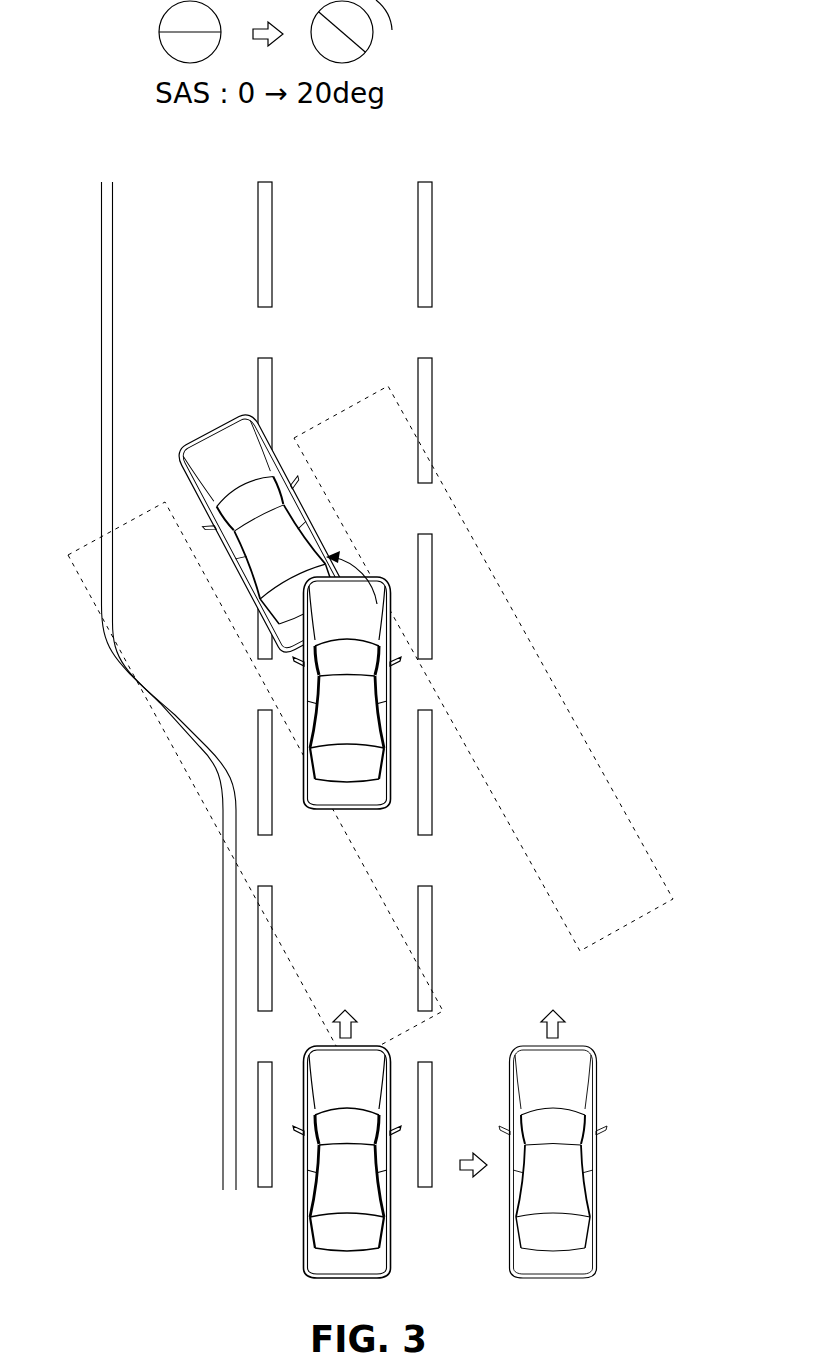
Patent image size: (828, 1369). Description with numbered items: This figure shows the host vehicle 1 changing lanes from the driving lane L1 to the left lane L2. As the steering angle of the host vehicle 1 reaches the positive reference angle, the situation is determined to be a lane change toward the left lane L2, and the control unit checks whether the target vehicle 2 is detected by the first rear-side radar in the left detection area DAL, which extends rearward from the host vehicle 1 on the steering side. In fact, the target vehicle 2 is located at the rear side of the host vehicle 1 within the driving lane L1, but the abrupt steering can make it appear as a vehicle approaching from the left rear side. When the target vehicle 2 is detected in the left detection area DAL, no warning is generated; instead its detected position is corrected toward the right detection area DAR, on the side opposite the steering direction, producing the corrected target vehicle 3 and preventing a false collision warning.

The host vehicle 1 is at (367, 768).
The target vehicle 2 is at (363, 1233).
The corrected target vehicle 3 is at (567, 1235).
The driving lane L1 is at (357, 213).
The left lane L2 is at (173, 213).
The left detection area DAL is at (270, 863).
The right detection area DAR is at (552, 703).